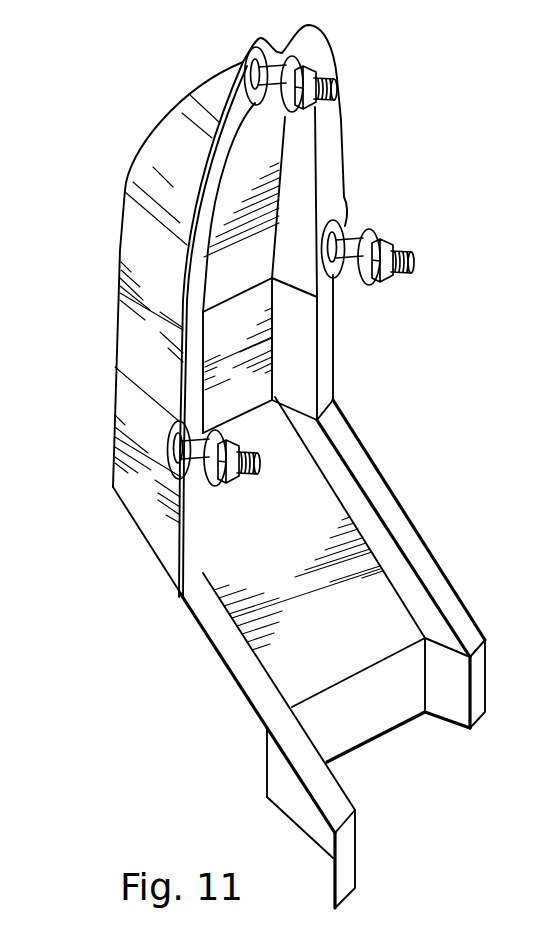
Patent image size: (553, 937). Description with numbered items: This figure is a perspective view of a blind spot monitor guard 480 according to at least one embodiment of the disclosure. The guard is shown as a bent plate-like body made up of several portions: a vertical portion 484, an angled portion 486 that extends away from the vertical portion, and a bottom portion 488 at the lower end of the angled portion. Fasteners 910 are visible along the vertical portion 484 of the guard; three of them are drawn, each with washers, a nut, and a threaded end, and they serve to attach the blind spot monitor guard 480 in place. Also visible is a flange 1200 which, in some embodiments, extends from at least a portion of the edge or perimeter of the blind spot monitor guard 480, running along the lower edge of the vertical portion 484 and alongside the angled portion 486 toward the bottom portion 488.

The blind spot monitor guard 480 is at (93, 125).
The vertical portion 484 is at (117, 341).
The angled portion 486 is at (387, 613).
The bottom portion 488 is at (353, 733).
The fasteners 910 is at (318, 66).
The flange 1200 is at (243, 663).